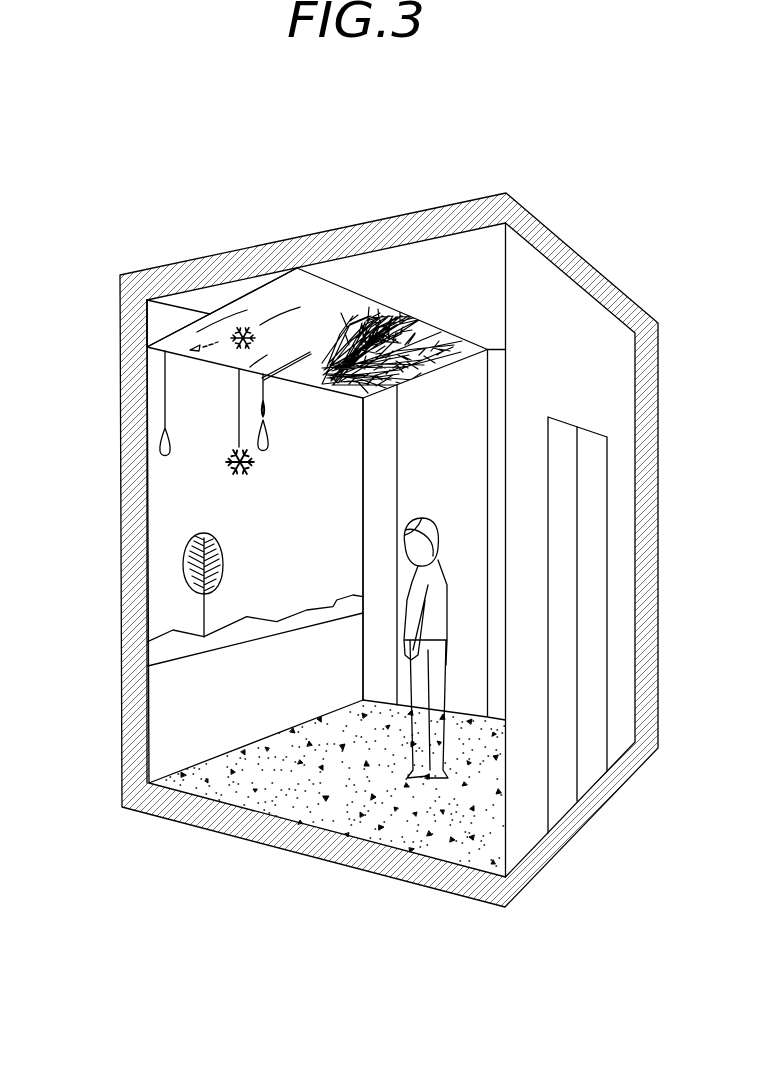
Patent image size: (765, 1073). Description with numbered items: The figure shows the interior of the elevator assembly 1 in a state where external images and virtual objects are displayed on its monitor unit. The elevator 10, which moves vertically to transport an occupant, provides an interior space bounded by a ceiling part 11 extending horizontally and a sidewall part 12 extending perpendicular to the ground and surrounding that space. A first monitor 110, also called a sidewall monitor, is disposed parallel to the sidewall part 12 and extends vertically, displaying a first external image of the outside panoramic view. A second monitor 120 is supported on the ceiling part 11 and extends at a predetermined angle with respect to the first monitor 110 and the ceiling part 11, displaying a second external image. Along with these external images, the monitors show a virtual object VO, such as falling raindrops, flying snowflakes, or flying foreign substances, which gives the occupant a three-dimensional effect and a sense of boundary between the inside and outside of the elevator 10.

The elevator assembly 1 is at (396, 144).
The elevator 10 is at (257, 215).
The ceiling part 11 is at (227, 293).
The sidewall part 12 is at (167, 325).
The first monitor 110 is at (158, 548).
The second monitor 120 is at (318, 297).
The virtual object VO is at (235, 468).